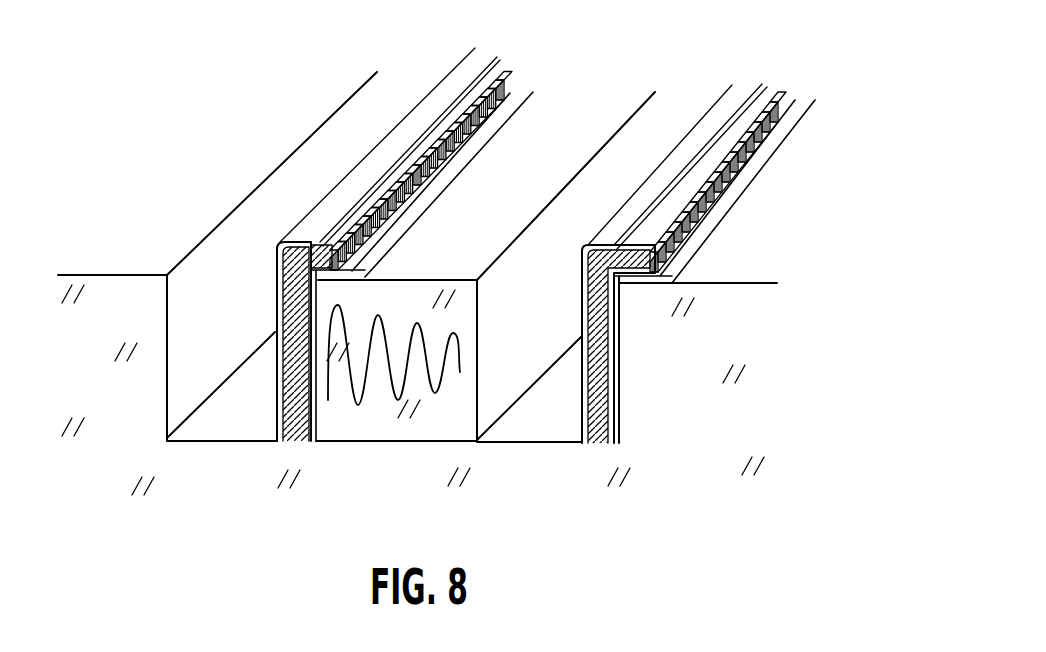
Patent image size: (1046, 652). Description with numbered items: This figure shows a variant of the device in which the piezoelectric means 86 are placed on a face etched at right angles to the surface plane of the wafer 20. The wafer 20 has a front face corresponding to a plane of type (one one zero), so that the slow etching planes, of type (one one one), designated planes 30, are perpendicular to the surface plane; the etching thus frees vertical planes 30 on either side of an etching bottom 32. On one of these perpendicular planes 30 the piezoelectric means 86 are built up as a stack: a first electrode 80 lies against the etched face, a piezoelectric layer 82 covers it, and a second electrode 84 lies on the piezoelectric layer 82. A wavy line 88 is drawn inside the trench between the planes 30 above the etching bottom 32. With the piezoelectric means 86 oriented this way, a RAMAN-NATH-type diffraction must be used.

The wafer 20 is at (700, 470).
The planes (111) 30 is at (472, 366).
The etching bottom 32 is at (535, 441).
The first electrode 80 is at (313, 423).
The piezoelectric layer 82 is at (293, 428).
The second electrode 84 is at (278, 428).
The piezoelectric means 86 is at (277, 313).
The wire element 88 is at (438, 388).